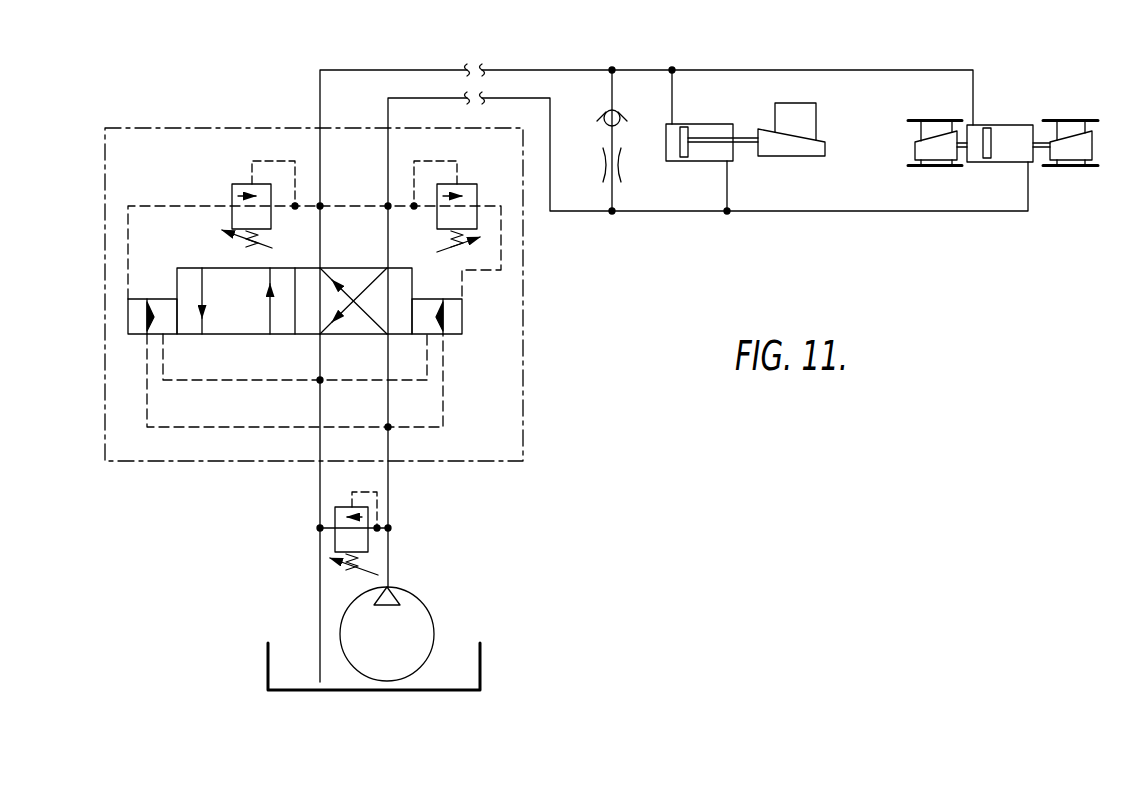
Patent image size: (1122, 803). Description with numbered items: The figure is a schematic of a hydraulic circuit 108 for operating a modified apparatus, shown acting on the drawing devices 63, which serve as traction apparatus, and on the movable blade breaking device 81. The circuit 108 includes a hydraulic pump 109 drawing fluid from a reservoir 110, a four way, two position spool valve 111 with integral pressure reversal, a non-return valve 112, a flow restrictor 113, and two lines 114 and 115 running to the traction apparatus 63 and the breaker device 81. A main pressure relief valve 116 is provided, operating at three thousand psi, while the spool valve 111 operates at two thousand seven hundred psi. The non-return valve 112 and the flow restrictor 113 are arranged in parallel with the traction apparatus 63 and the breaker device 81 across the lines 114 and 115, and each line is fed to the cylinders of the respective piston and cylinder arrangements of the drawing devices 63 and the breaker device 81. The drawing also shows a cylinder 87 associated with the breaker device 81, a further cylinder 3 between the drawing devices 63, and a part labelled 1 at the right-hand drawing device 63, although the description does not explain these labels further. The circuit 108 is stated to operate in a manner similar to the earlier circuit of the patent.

The wheel 1 is at (1080, 116).
The brake actuating cylinder 3 is at (1001, 121).
The drawing device 63 is at (912, 143).
The movable blade breaking device 81 is at (827, 129).
The hydraulic cylinder 87 is at (706, 121).
The hydraulic circuit 108 is at (548, 250).
The hydraulic pump 109 is at (352, 615).
The reservoir 110 is at (483, 655).
The spool valve 111 is at (500, 389).
The non-return valve 112 is at (607, 112).
The flow restrictor 113 is at (622, 165).
The line 114 is at (402, 76).
The line 115 is at (548, 103).
The main pressure relief valve 116 is at (338, 512).